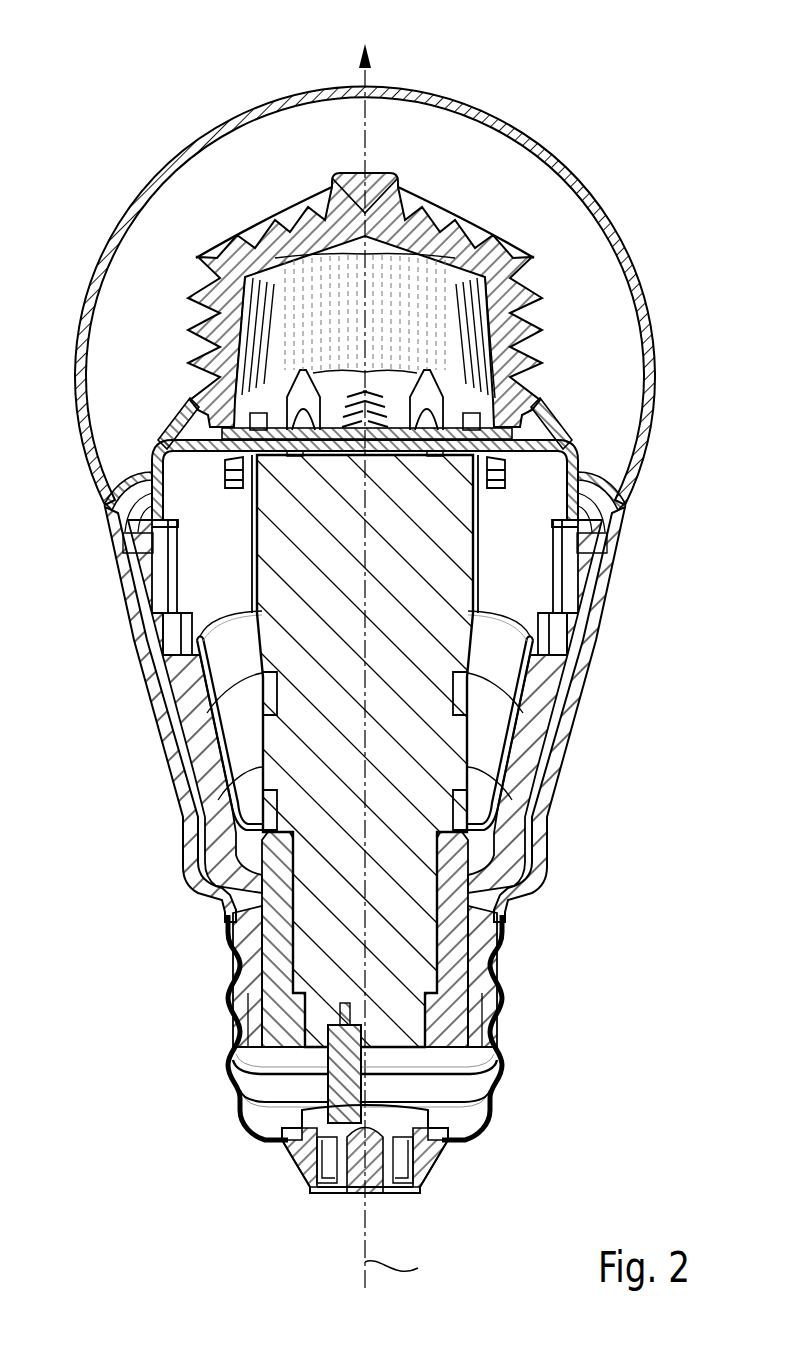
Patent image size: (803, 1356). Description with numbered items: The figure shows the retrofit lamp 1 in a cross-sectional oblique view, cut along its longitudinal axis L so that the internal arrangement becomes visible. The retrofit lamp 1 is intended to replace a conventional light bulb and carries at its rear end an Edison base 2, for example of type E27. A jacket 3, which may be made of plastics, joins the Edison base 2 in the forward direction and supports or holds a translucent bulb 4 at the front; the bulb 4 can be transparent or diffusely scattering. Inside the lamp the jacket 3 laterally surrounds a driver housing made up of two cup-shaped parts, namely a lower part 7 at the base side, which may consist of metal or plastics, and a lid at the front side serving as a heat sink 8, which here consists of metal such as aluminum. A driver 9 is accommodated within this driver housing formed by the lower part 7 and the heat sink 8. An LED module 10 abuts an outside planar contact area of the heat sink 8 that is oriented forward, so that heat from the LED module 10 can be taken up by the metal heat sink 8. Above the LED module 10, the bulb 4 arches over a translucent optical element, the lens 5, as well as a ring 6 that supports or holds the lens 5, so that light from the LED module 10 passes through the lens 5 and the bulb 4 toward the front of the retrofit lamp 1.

The retrofit lamp 1 is at (172, 84).
The Edison base 2 is at (507, 1008).
The jacket 3 is at (547, 787).
The bulb 4 is at (458, 96).
The lens 5 is at (513, 252).
The ring 6 is at (580, 447).
The lower part 7 is at (232, 937).
The heat sink 8 is at (207, 583).
The driver 9 is at (462, 645).
The LED module 10 is at (328, 347).